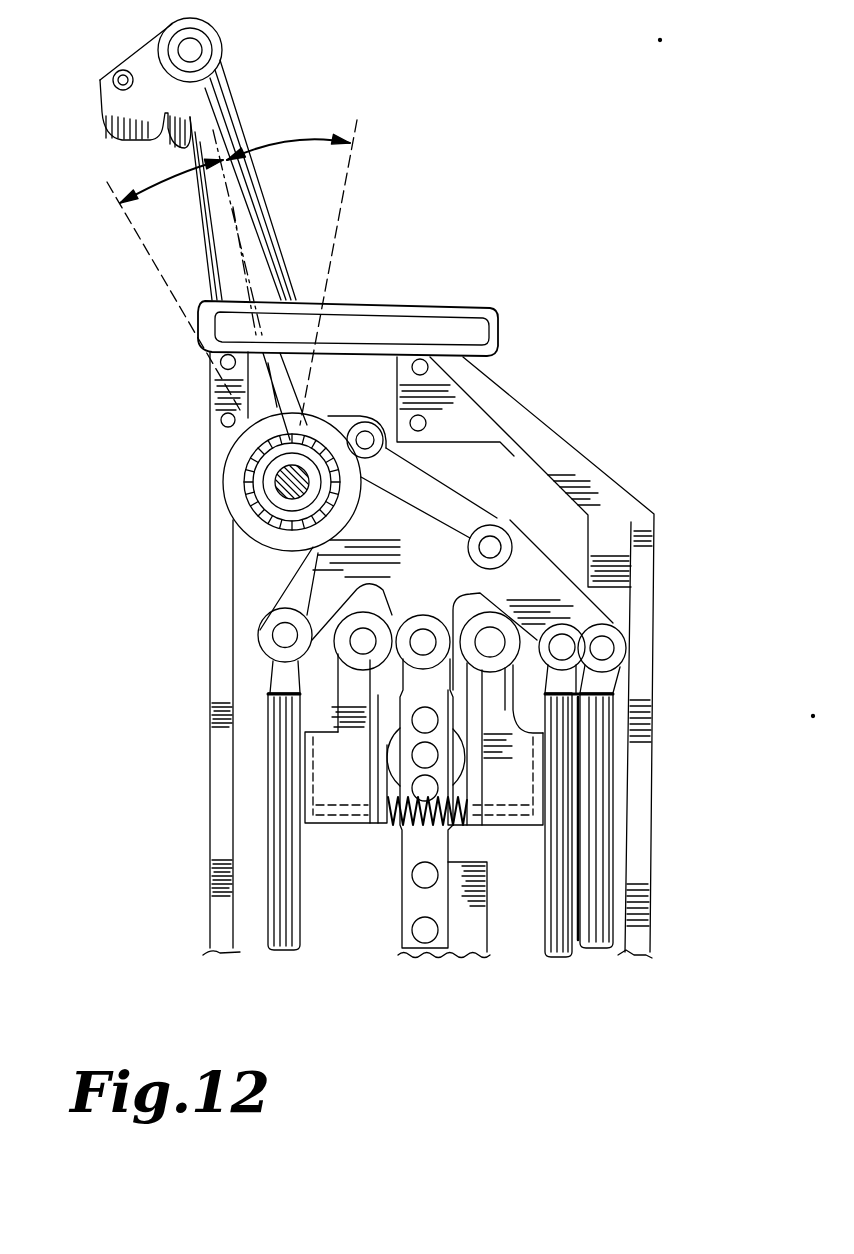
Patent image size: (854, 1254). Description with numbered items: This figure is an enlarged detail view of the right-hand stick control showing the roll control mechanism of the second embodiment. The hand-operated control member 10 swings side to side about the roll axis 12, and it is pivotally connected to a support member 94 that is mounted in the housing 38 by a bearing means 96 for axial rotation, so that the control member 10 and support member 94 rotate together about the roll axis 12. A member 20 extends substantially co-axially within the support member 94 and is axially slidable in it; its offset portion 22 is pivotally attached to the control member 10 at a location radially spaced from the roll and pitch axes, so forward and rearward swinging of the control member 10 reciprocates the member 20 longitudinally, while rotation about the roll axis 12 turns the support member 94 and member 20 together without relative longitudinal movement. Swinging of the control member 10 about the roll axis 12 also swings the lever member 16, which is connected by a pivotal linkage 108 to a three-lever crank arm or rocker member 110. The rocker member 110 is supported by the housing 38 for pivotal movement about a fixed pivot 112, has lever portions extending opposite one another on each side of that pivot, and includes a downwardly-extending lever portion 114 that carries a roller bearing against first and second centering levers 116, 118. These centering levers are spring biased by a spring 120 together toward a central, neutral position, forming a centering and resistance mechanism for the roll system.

The hand-operated control member 10 is at (237, 102).
The lever member 16 is at (328, 433).
The offset portion 22 is at (265, 380).
The bearing means 96 is at (272, 414).
The support member 94 is at (292, 476).
The member 20 is at (258, 492).
The roll axis 12 is at (300, 540).
The rocker member 110 is at (335, 578).
The pivotal linkage 108 is at (433, 493).
The housing 38 is at (640, 562).
The fixed pivot 112 is at (423, 642).
The downwardly-extending lever portion 114 is at (413, 850).
The first centering lever 116 is at (520, 768).
The second centering lever 118 is at (335, 765).
The spring 120 is at (457, 833).